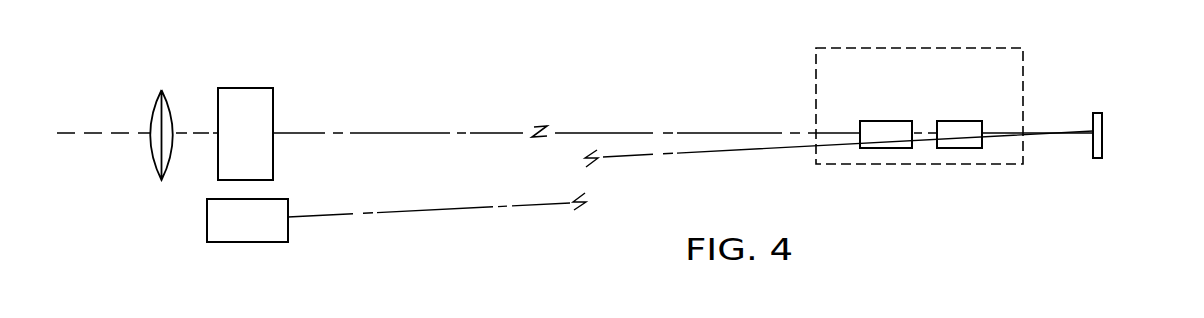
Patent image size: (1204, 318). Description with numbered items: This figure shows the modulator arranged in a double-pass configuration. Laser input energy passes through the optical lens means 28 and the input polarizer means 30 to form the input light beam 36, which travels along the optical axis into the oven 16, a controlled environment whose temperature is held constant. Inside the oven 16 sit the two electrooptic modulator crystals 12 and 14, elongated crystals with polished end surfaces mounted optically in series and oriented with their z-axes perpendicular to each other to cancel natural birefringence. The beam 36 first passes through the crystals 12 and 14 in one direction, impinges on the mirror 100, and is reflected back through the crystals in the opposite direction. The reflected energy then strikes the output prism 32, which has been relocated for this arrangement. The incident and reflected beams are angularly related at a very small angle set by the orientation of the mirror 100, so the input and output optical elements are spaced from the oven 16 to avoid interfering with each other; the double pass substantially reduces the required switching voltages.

The electrooptic modulator crystal 12 is at (890, 142).
The electrooptic modulator crystal 14 is at (965, 142).
The oven 16 is at (1022, 75).
The optical lens means 28 is at (167, 93).
The input polarizer means 30 is at (273, 102).
The output prism 32 is at (263, 233).
The input light beam 36 is at (383, 133).
The mirror 100 is at (1102, 123).